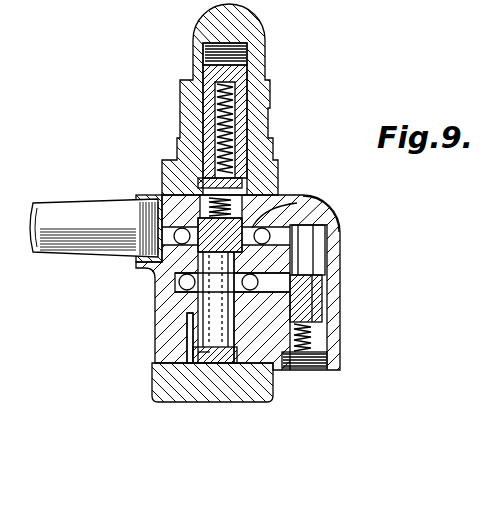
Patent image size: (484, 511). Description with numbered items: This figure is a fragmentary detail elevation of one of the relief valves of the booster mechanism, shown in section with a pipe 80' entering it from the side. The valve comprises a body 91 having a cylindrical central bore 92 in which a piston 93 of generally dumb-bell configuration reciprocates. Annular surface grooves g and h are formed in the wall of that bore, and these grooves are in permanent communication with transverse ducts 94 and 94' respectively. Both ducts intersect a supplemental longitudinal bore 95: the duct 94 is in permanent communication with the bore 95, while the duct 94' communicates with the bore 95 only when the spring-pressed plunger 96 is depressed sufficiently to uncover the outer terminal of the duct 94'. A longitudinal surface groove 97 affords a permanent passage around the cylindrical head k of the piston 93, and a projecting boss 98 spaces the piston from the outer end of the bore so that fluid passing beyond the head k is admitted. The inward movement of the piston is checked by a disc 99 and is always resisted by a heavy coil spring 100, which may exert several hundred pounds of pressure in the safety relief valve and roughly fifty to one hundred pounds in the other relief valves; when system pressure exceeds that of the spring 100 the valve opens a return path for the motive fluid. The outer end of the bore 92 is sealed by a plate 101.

The supply pipe 80' is at (96, 217).
The annular surface groove g is at (300, 203).
The annular surface groove h is at (175, 284).
The cylindrical head k is at (208, 358).
The body 91 is at (155, 325).
The cylindrical central bore 92 is at (240, 330).
The piston 93 is at (210, 332).
The transverse duct 94 is at (345, 212).
The transverse duct 94' is at (339, 333).
The supplemental longitudinal bore 95 is at (320, 265).
The spring-pressed plunger 96 is at (315, 287).
The longitudinal surface groove 97 is at (183, 343).
The projecting boss 98 is at (215, 365).
The disc 99 is at (276, 170).
The heavy coil spring 100 is at (232, 143).
The plate 101 is at (162, 378).